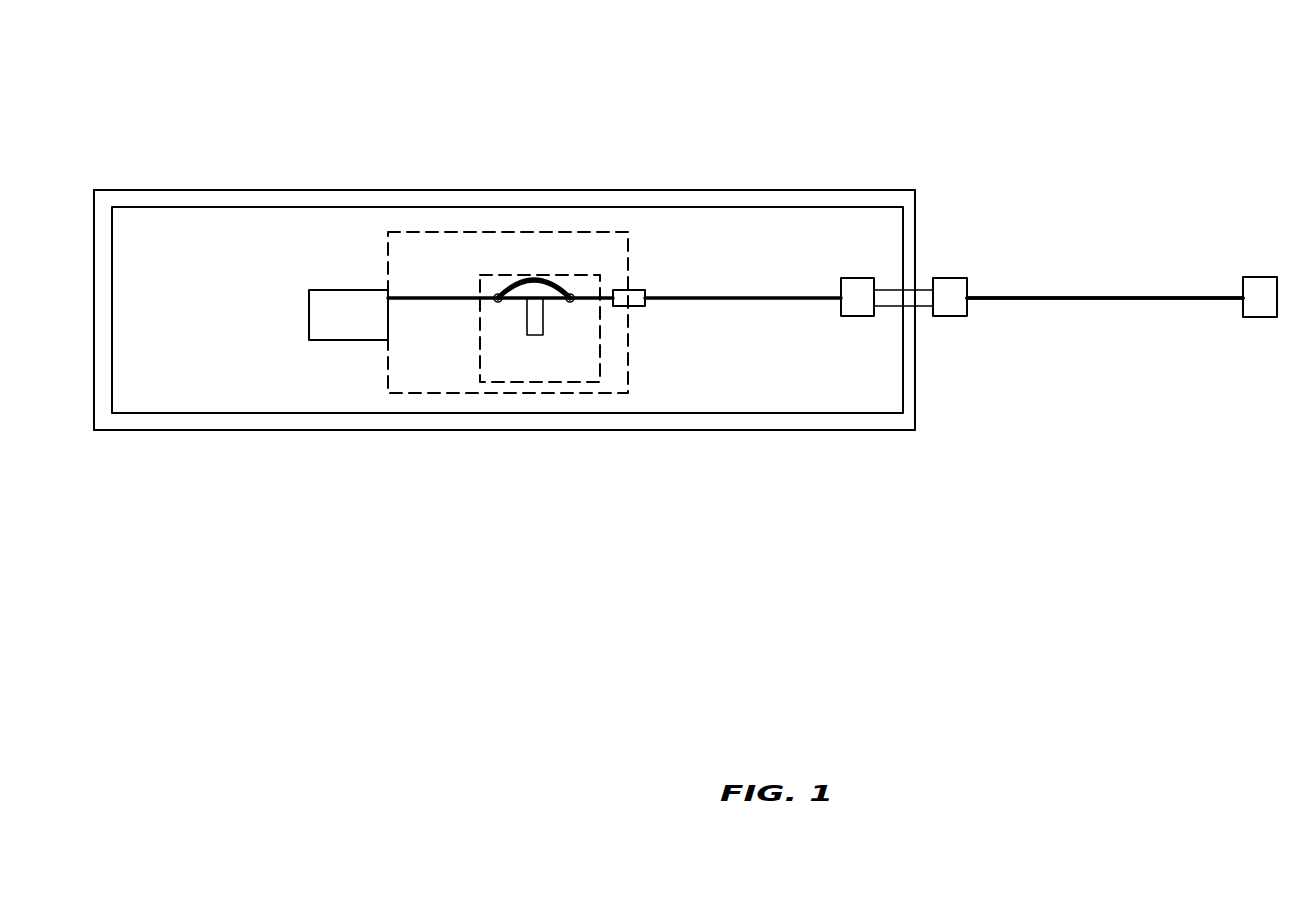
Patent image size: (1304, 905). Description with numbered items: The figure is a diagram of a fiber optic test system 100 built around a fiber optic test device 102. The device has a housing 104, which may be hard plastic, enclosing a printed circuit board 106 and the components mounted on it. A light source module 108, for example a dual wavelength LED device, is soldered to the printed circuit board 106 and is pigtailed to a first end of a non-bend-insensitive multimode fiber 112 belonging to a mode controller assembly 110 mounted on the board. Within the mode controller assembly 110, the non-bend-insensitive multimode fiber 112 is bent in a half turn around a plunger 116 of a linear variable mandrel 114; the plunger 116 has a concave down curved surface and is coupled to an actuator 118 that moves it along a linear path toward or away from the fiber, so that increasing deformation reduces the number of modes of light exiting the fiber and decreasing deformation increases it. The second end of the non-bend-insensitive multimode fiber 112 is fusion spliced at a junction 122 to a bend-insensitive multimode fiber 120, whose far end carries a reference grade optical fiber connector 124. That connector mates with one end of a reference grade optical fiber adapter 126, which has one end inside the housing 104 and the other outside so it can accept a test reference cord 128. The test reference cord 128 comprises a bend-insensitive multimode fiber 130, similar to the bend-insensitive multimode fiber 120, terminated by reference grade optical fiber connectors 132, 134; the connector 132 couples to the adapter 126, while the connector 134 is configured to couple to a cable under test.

The fiber optic test system 100 is at (1048, 66).
The fiber optic test device 102 is at (466, 188).
The housing 104 is at (885, 190).
The printed circuit board 106 is at (722, 207).
The light source module 108 is at (318, 312).
The mode controller assembly 110 is at (388, 252).
The non-bend-insensitive multimode fiber 112 is at (460, 298).
The linear variable mandrel 114 is at (480, 345).
The plunger 116 is at (548, 293).
The actuator 118 is at (533, 322).
The bend-insensitive multimode fiber 120 is at (735, 300).
The junction 122 is at (630, 297).
The reference grade optical fiber connector 124 is at (852, 290).
The reference grade optical fiber adapter 126 is at (905, 295).
The test reference cord 128 is at (1097, 282).
The bend-insensitive multimode fiber 130 is at (1112, 300).
The reference grade optical fiber connector 132 is at (955, 318).
The reference grade optical fiber connector 134 is at (1258, 305).